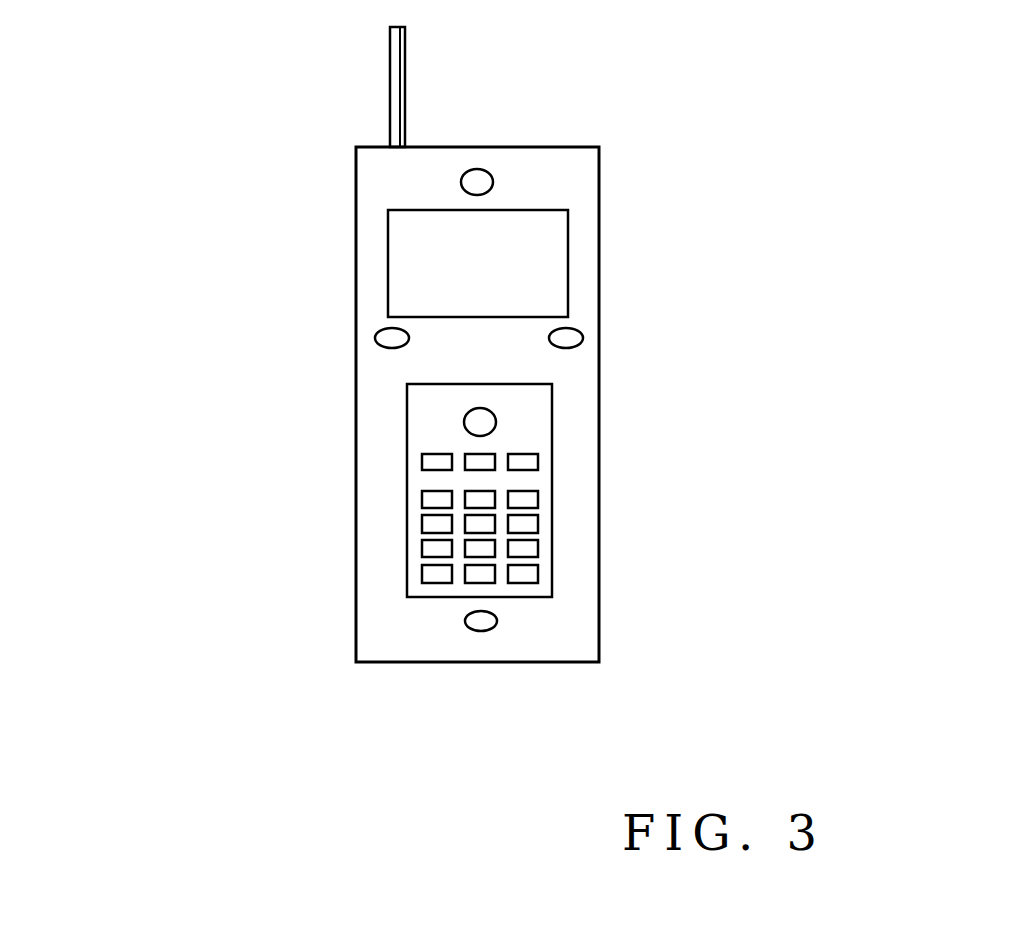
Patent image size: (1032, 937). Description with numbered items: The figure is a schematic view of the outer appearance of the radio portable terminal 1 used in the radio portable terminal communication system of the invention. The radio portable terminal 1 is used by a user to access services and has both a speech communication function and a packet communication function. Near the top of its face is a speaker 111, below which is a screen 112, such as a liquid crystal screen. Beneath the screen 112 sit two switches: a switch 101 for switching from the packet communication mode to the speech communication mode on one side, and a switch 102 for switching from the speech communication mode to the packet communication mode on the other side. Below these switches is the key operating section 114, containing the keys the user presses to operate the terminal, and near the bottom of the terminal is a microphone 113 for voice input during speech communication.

The radio portable terminal 1 is at (447, 147).
The speaker 111 is at (485, 170).
The screen 112 is at (417, 262).
The switch for switching from packet communication mode to speech communication mode 101 is at (375, 338).
The switch for switching from speech communication mode to packet communication mode 102 is at (583, 338).
The key operating section 114 is at (407, 430).
The microphone 113 is at (481, 627).